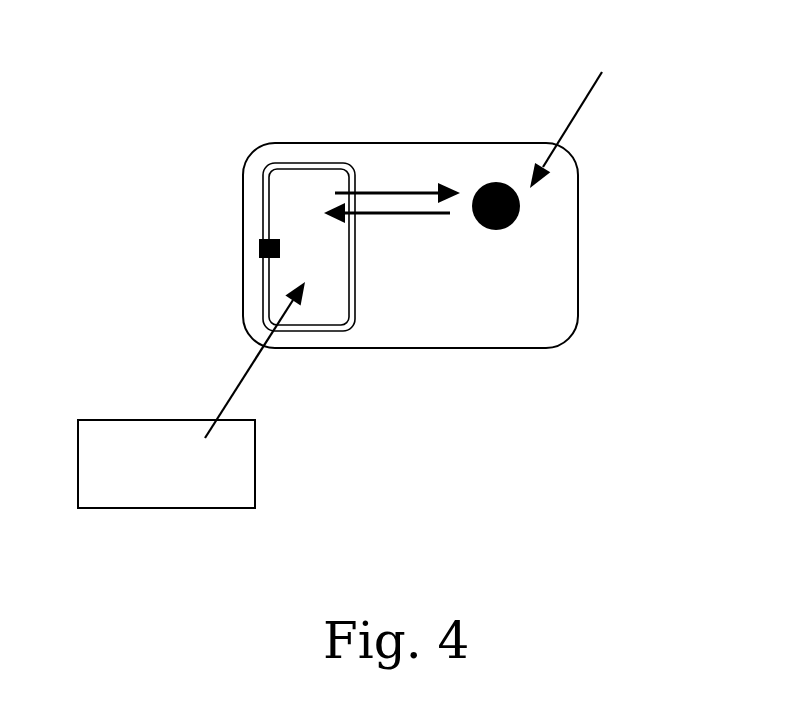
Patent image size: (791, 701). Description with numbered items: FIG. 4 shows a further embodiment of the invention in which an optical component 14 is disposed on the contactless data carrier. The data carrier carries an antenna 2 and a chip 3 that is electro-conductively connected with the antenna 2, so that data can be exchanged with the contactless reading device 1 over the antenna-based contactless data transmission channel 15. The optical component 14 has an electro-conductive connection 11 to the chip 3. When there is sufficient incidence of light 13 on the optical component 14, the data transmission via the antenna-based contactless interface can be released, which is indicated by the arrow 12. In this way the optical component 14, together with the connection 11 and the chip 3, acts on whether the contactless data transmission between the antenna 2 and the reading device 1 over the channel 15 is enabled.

The reading device 1 is at (138, 418).
The antenna 2 is at (288, 203).
The chip 3 is at (260, 258).
The electro-conductive connection 11 is at (410, 193).
The arrow 12 is at (368, 213).
The incidence of light 13 is at (552, 117).
The optical component 14 is at (496, 206).
The antenna-based contactless data transmission channel 15 is at (228, 388).